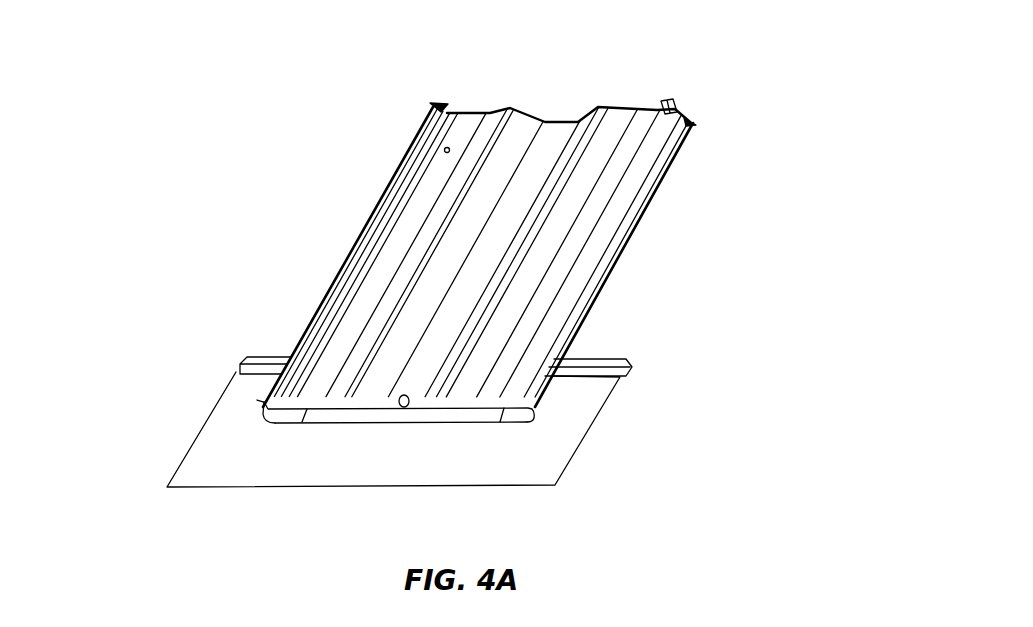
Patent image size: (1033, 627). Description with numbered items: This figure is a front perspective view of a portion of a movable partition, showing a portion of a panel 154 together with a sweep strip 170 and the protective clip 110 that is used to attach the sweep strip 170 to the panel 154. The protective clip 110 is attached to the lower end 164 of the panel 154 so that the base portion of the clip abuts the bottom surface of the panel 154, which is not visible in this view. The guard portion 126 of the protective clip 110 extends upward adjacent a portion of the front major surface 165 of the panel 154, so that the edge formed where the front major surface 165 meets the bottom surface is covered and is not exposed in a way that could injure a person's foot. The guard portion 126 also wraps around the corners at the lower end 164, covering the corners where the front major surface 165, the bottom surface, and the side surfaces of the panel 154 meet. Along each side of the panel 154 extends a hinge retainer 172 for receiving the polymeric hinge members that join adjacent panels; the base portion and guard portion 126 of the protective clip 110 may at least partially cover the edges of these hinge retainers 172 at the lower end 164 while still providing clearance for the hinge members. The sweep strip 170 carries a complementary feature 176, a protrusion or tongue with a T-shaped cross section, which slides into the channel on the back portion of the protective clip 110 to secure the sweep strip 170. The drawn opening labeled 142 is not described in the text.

The panel 154 is at (256, 84).
The protective clip 110 is at (530, 412).
The guard portion 126 is at (427, 423).
The drain hole 142 is at (403, 407).
The lower end 164 is at (449, 316).
The front major surface 165 is at (393, 293).
The sweep strip 170 is at (587, 438).
The hinge retainer 172 is at (370, 208).
The complementary feature 176 is at (612, 368).